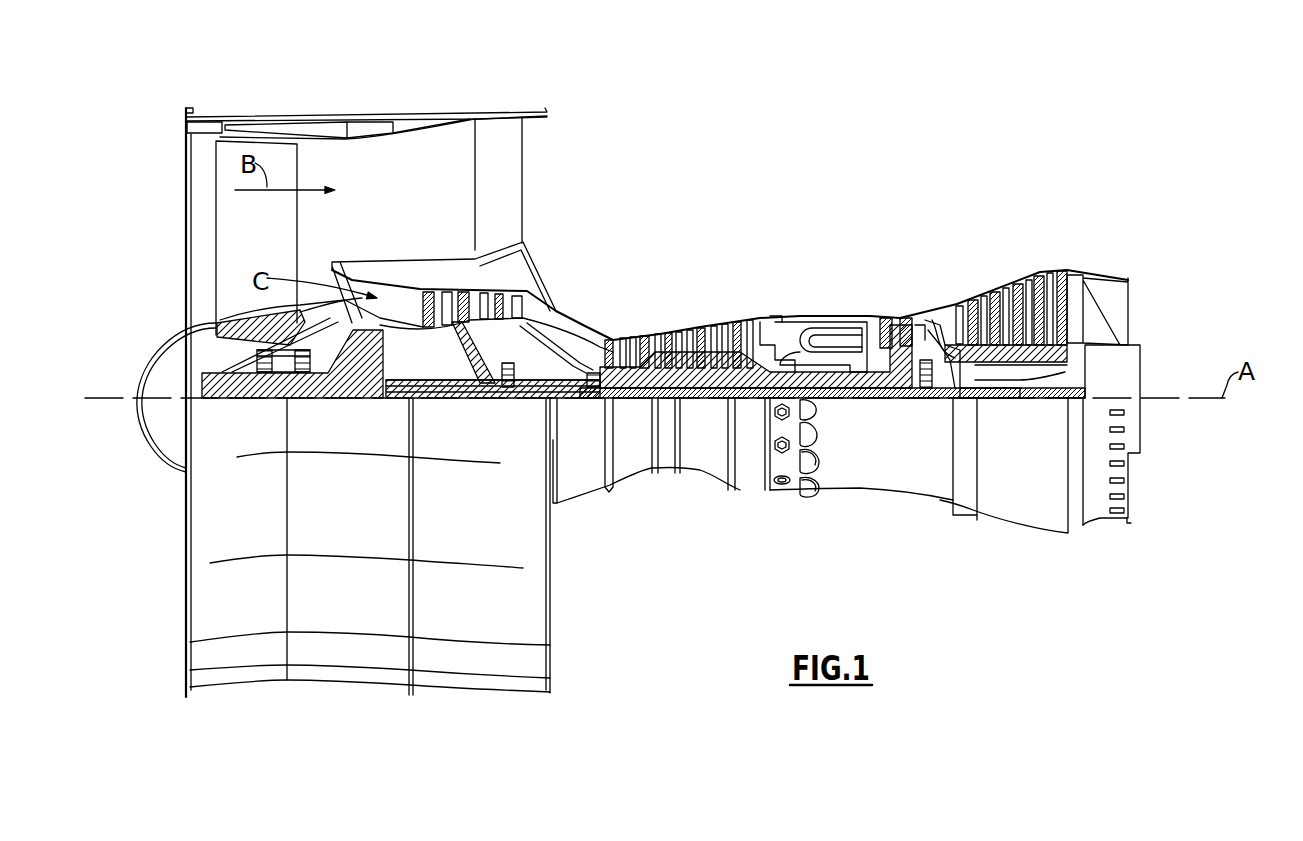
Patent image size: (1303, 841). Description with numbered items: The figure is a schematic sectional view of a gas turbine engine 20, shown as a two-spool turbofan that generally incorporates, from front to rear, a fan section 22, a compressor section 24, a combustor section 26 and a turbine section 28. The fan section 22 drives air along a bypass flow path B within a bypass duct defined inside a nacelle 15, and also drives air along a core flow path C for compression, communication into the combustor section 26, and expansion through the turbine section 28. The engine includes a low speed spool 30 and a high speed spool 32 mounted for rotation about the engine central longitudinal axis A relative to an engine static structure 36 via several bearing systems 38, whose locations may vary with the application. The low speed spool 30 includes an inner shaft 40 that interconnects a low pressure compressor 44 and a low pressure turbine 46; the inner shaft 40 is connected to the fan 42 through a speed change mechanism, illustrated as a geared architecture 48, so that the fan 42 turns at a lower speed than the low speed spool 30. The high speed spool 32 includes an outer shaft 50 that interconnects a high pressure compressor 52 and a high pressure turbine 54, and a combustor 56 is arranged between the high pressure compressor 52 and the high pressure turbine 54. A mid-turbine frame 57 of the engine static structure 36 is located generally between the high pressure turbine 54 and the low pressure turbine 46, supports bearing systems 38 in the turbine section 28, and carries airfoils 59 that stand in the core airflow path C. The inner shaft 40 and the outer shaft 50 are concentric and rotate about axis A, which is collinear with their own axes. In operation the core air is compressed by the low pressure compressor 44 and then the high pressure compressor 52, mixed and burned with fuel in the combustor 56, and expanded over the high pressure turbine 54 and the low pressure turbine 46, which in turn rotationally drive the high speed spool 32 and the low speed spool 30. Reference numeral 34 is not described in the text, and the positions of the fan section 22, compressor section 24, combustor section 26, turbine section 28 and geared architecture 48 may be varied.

The nacelle 15 is at (370, 118).
The gas turbine engine 20 is at (834, 160).
The fan section 22 is at (296, 98).
The compressor section 24 is at (604, 298).
The combustor section 26 is at (823, 290).
The turbine section 28 is at (974, 248).
The low speed spool 30 is at (708, 415).
The high speed spool 32 is at (755, 343).
The tail cone 34 is at (1065, 372).
The engine static structure 36 is at (748, 498).
The bearing systems 38 is at (503, 380).
The inner shaft 40 is at (568, 398).
The fan 42 is at (272, 243).
The low pressure compressor 44 is at (470, 307).
The low pressure turbine 46 is at (1017, 285).
The geared architecture 48 is at (377, 380).
The outer shaft 50 is at (837, 390).
The high pressure compressor 52 is at (672, 345).
The high pressure turbine 54 is at (893, 320).
The combustor 56 is at (824, 342).
The mid-turbine frame 57 is at (936, 296).
The airfoils 59 is at (972, 367).